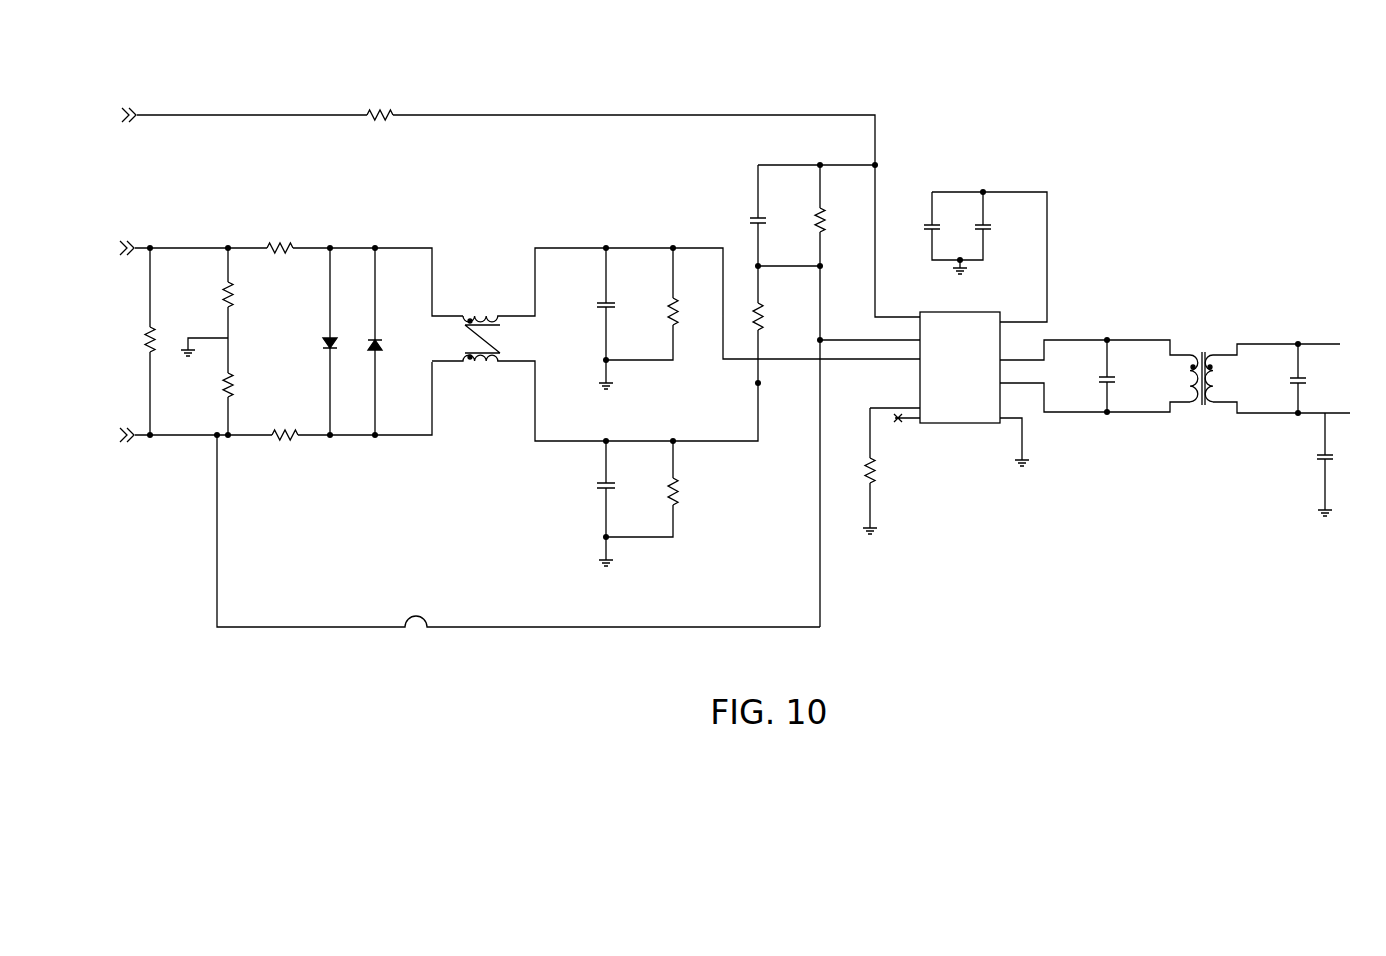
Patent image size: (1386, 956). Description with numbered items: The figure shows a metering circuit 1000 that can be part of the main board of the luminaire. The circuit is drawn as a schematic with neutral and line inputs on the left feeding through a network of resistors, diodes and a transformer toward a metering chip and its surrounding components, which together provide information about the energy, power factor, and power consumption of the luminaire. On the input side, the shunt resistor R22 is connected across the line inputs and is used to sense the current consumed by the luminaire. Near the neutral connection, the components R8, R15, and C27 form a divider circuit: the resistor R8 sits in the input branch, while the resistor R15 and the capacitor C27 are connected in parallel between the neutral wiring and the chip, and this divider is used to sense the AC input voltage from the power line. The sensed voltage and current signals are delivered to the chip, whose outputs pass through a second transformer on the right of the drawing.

The metering circuit 1000 is at (264, 78).
The shunt resistor R22 is at (127, 341).
The resistor R8 is at (243, 341).
The capacitor C27 is at (734, 215).
The resistor R15 is at (840, 215).